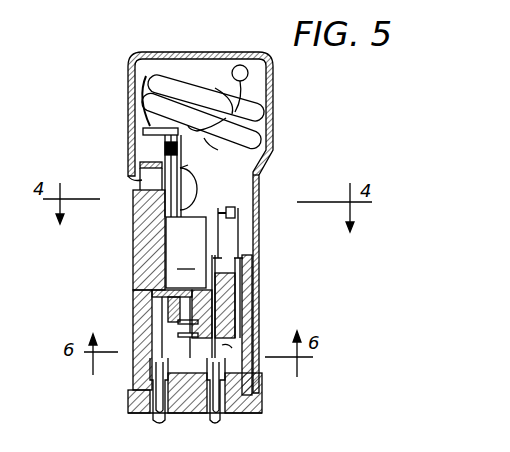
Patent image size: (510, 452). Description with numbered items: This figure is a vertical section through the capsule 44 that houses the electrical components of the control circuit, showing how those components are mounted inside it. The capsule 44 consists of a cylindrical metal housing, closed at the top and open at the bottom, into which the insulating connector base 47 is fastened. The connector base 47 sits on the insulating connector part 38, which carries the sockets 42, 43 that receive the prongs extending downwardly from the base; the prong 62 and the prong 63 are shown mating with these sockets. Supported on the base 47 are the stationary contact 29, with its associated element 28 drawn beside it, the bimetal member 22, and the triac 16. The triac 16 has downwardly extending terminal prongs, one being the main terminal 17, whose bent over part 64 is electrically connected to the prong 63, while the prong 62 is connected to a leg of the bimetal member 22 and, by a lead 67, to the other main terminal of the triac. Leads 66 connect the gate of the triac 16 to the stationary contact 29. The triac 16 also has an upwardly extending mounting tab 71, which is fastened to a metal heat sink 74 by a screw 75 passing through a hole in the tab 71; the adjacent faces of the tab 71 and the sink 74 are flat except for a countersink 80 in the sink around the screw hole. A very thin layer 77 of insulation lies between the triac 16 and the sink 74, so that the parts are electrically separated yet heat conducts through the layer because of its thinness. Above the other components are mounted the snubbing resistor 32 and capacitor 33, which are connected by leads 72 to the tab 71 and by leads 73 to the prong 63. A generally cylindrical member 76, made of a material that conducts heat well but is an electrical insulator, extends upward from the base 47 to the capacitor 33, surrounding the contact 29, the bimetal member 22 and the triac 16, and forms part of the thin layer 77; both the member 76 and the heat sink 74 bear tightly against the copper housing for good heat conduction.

The triac 16 is at (186, 252).
The main terminal 17 is at (205, 336).
The bimetal member 22 is at (218, 237).
The contact 28 is at (223, 208).
The stationary contact 29 is at (235, 209).
The snubbing resistor 32 is at (238, 62).
The capacitor 33 is at (172, 77).
The connector part 38 is at (266, 405).
The socket 42 is at (218, 420).
The socket 43 is at (153, 415).
The capsule 44 is at (278, 116).
The connector base 47 is at (253, 295).
The prong 62 is at (236, 354).
The prong 63 is at (158, 347).
The bent over part 64 is at (150, 306).
The leads 66 is at (257, 313).
The lead 67 is at (182, 389).
The mounting tab 71 is at (165, 151).
The leads 72 is at (150, 123).
The leads 73 is at (220, 151).
The heat sink 74 is at (147, 243).
The screw 75 is at (191, 176).
The cylindrical member 76 is at (260, 160).
The thin layer of insulation 77 is at (150, 215).
The countersink 80 is at (150, 181).